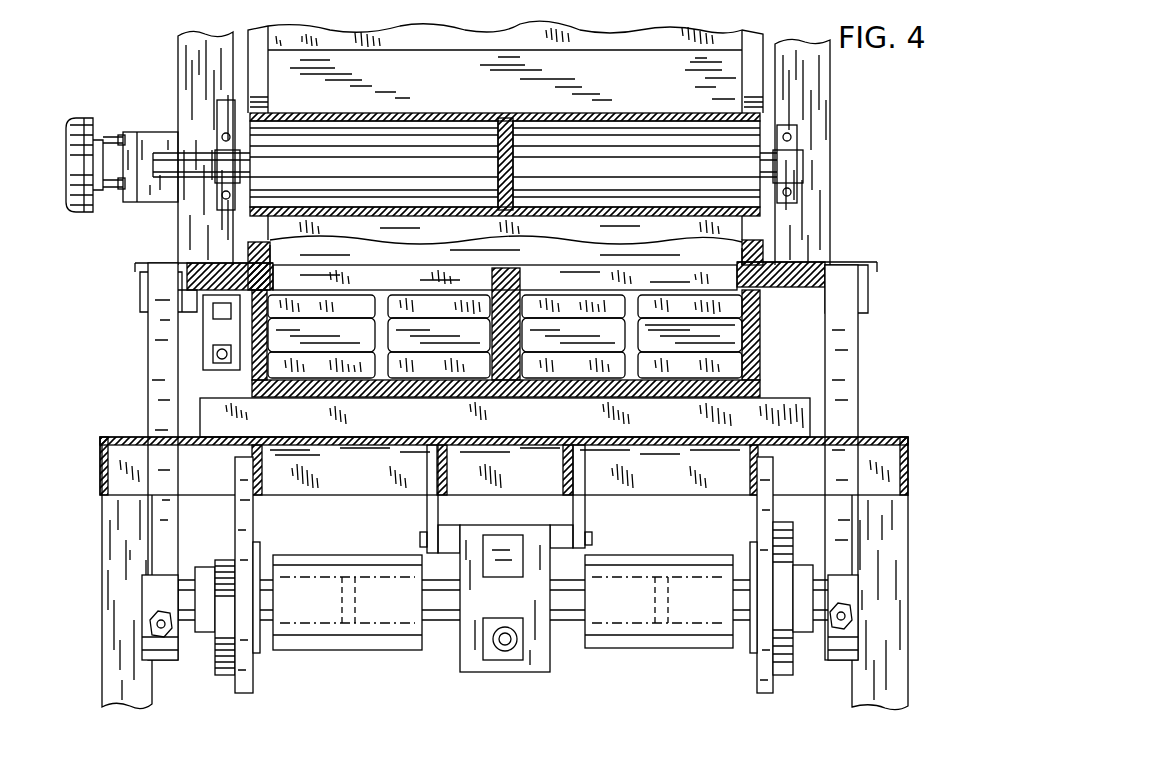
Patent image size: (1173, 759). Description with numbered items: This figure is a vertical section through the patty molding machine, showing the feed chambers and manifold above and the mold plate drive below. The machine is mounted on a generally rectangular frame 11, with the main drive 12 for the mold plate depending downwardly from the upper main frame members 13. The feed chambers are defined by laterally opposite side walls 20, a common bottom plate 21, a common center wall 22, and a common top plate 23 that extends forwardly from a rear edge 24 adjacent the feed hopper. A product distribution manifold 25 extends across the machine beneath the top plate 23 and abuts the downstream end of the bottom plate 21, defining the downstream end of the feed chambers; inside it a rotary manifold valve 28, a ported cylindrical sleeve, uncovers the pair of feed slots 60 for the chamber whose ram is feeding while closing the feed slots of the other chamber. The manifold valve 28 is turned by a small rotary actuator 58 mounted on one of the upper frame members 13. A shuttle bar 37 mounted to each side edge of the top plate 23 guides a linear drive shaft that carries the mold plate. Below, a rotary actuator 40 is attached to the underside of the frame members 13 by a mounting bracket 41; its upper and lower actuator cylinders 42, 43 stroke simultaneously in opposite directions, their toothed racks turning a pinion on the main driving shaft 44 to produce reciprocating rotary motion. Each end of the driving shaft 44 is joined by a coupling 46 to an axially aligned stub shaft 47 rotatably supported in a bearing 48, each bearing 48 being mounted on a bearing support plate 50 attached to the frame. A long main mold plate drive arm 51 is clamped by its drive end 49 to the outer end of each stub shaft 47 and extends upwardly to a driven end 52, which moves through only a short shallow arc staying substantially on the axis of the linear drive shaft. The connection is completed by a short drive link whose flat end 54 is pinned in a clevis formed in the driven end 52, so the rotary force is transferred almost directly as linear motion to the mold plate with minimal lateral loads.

The frame 11 is at (96, 577).
The main drive 12 is at (323, 666).
The upper main frame members 13 is at (136, 438).
The side walls 20 is at (258, 375).
The bottom plate 21 is at (432, 398).
The center wall 22 is at (515, 362).
The top plate 23 is at (673, 284).
The rear edge 24 is at (537, 272).
The product distribution manifold 25 is at (737, 300).
The rotary manifold valve 28 is at (715, 333).
The shuttle bar 37 is at (140, 296).
The rotary actuator 40 is at (546, 637).
The mounting bracket 41 is at (582, 531).
The upper actuator cylinder 42 is at (507, 540).
The lower actuator cylinder 43 is at (492, 641).
The main driving shaft 44 is at (440, 613).
The coupling 46 is at (645, 640).
The stub shaft 47 is at (742, 627).
The bearing 48 is at (205, 625).
The drive end 49 is at (845, 603).
The bearing support plate 50 is at (245, 696).
The main mold plate drive arm 51 is at (167, 553).
The driven end 52 is at (848, 326).
The flat end 54 is at (843, 300).
The small rotary actuator 58 is at (225, 331).
The feed slots 60 is at (400, 323).